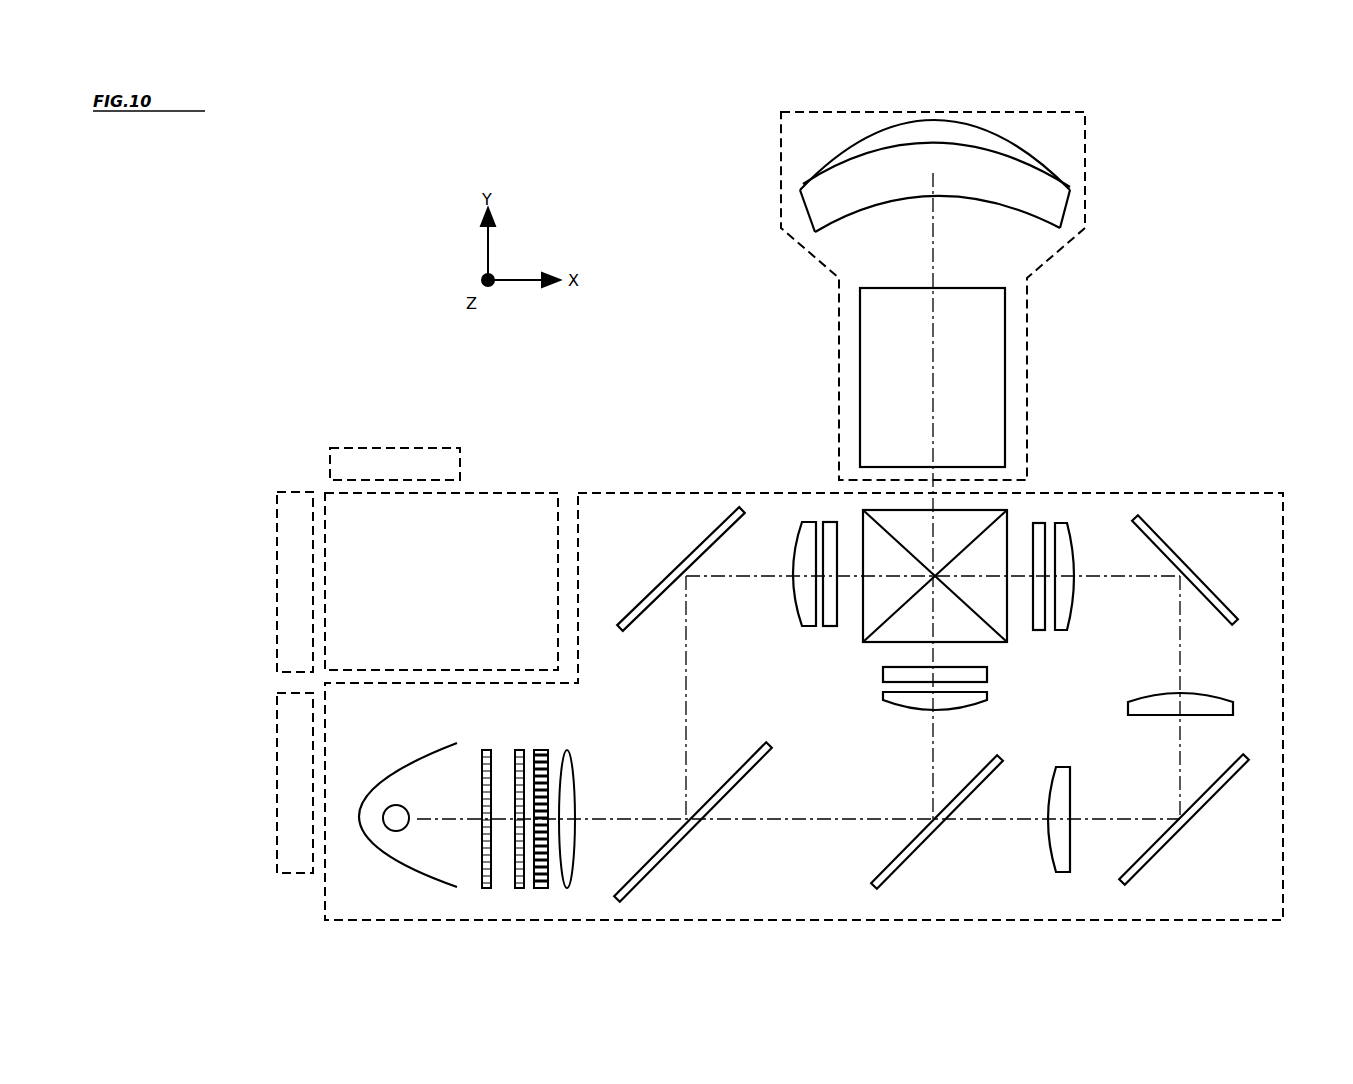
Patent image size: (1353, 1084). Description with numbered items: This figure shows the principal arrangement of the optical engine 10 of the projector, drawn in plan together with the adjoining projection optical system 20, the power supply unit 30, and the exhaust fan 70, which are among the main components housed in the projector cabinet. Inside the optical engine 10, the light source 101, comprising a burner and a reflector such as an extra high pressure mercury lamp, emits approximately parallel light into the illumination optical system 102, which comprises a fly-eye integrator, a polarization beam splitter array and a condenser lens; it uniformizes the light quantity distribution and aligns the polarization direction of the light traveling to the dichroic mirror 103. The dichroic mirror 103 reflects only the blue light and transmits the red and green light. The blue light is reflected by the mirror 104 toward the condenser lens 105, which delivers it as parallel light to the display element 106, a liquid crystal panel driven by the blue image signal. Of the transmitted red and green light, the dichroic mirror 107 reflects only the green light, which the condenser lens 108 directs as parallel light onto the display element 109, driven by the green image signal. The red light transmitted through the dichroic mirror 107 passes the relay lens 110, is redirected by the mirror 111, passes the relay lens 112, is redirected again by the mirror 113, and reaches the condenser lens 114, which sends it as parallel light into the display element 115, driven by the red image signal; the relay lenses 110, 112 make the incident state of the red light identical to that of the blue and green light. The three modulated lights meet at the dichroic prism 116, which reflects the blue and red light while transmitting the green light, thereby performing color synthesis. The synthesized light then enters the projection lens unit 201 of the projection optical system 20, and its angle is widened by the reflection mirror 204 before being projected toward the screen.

The optical engine 10 is at (1200, 492).
The projection optical system 20 is at (827, 360).
The power supply unit 30 is at (505, 493).
The exhaust fan 70 is at (355, 448).
The light source 101 is at (397, 752).
The illumination optical system 102 is at (573, 737).
The dichroic mirror 103 is at (662, 850).
The mirror 104 is at (667, 573).
The condenser lens 105 is at (805, 598).
The display element 106 is at (830, 625).
The dichroic mirror 107 is at (912, 848).
The condenser lens 108 is at (912, 712).
The display element 109 is at (880, 668).
The relay lens 110 is at (1068, 787).
The mirror 111 is at (1163, 852).
The relay lens 112 is at (1202, 695).
The mirror 113 is at (1205, 585).
The condenser lens 114 is at (1068, 602).
The display element 115 is at (1040, 632).
The dichroic prism 116 is at (991, 640).
The projection lens unit 201 is at (1000, 375).
The reflection mirror 204 is at (1052, 157).